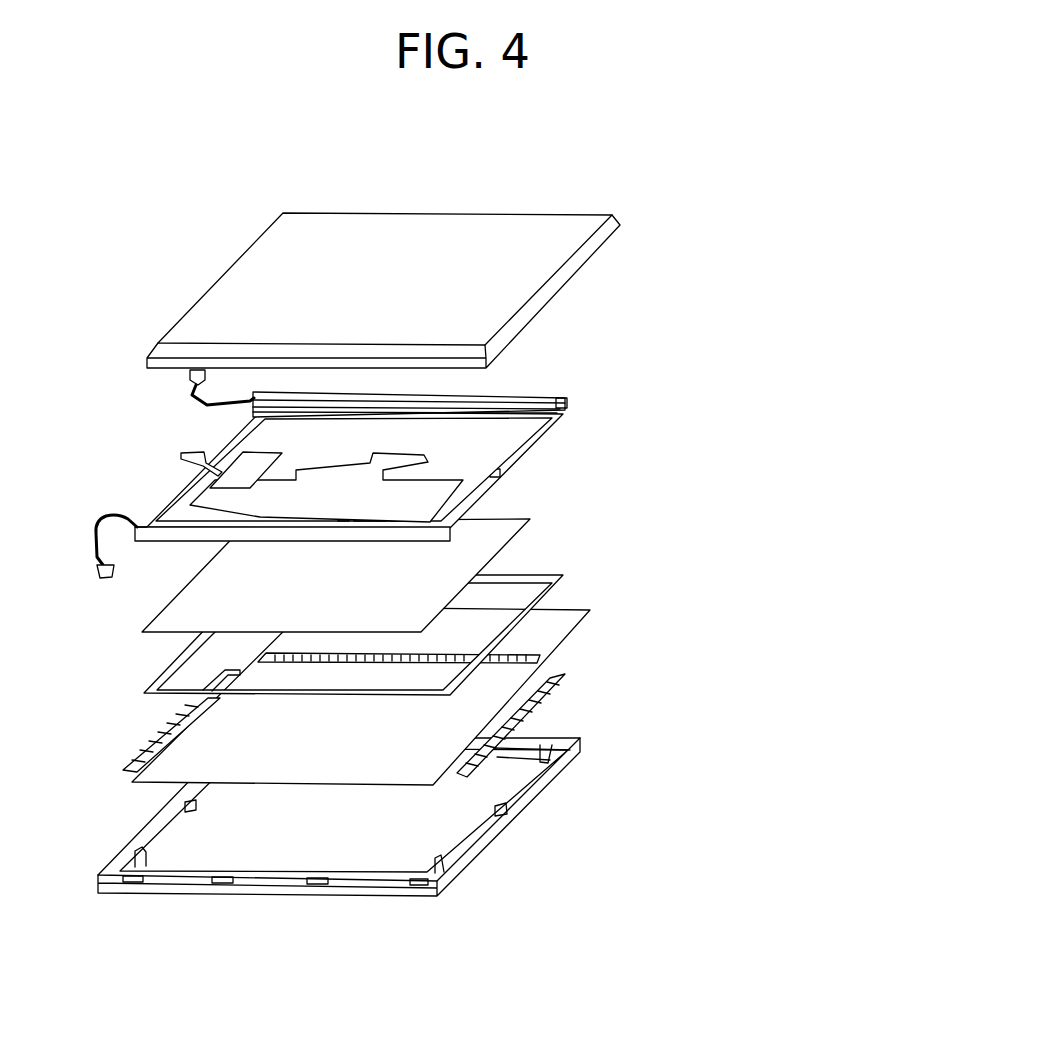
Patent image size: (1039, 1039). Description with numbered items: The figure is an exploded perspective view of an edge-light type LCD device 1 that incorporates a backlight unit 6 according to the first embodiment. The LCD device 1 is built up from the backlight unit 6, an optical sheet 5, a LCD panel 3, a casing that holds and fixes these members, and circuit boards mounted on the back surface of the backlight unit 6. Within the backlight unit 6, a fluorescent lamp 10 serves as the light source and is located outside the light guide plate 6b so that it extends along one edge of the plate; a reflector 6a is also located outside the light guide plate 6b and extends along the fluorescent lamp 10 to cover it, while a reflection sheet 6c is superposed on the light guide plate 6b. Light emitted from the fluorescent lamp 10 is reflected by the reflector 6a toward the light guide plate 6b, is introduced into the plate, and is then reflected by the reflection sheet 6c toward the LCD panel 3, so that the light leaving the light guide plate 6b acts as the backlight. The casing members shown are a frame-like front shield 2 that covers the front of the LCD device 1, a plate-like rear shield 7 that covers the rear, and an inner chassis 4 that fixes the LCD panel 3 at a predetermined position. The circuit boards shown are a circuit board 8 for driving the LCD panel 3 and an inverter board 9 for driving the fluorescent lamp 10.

The LCD device 1 is at (482, 489).
The front shield 2 is at (560, 798).
The LCD panel 3 is at (497, 698).
The inner chassis 4 is at (560, 595).
The optical sheet 5 is at (473, 555).
The backlight unit 6 is at (482, 457).
The reflector 6a is at (527, 392).
The light guide plate 6b is at (490, 492).
The reflection sheet 6c is at (470, 458).
The rear shield 7 is at (547, 266).
The circuit board 8 is at (255, 511).
The inverter board 9 is at (200, 474).
The fluorescent lamp 10 is at (533, 415).